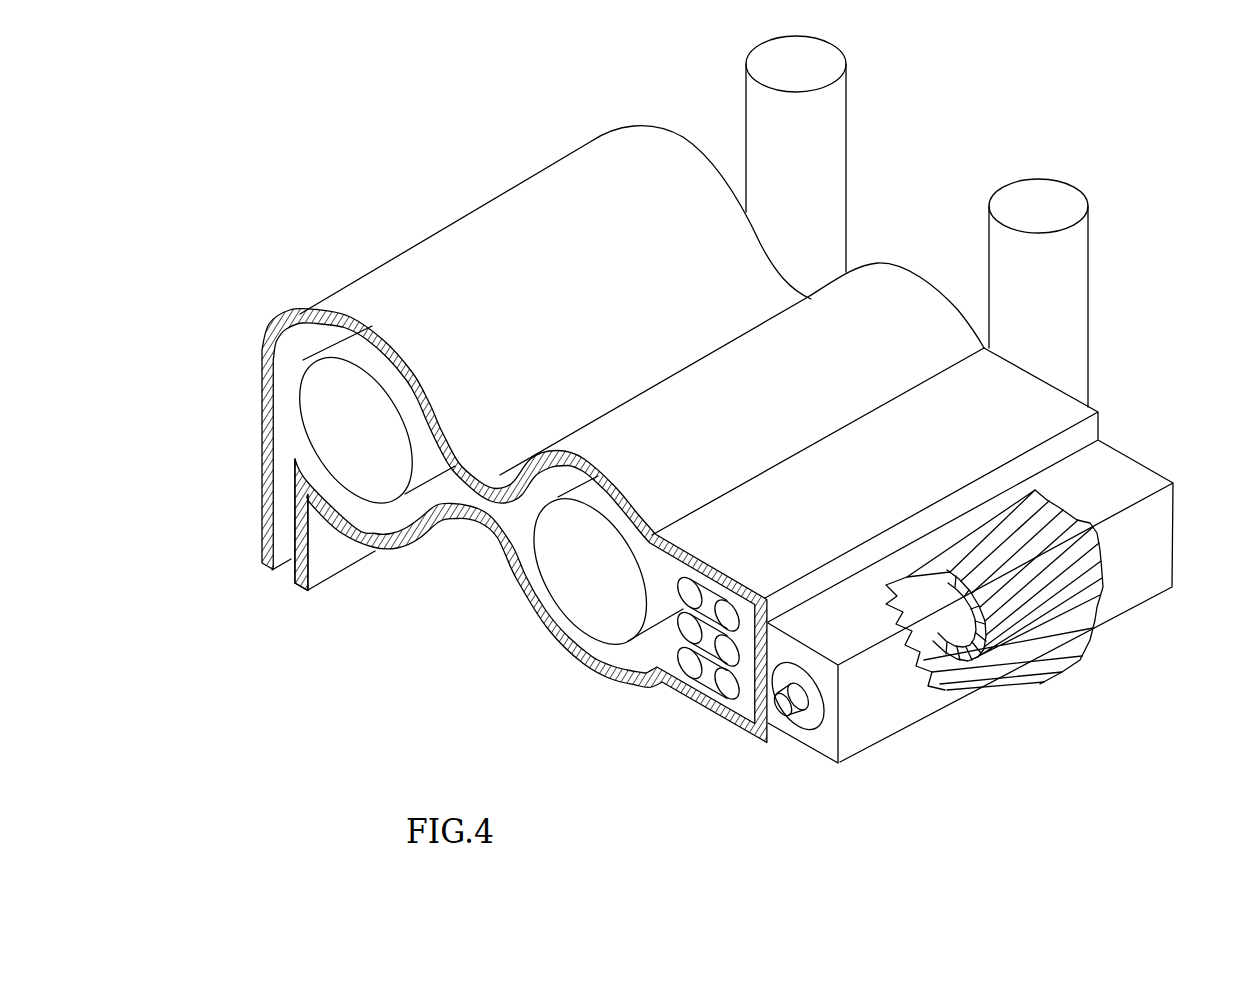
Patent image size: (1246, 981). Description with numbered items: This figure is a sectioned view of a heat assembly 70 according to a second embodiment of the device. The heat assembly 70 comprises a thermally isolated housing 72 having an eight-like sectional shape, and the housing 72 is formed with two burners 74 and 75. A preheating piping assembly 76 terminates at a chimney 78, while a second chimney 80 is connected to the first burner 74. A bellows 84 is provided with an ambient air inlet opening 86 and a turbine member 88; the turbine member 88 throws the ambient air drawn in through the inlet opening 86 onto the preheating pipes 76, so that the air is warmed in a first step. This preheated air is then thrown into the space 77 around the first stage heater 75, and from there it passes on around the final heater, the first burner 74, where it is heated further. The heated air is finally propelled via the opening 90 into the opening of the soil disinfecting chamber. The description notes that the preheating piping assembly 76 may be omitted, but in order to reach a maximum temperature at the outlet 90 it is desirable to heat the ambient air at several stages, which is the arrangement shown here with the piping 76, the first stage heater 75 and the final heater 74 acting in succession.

The heat assembly 70 is at (312, 188).
The thermally isolated housing 72 is at (520, 218).
The first burner 74 is at (343, 422).
The second burner 75 is at (583, 583).
The preheating piping assembly 76 is at (665, 692).
The space around the first stage heater 77 is at (637, 653).
The chimney 78 is at (1067, 297).
The second chimney 80 is at (823, 167).
The bellows 84 is at (903, 687).
The ambient air inlet opening 86 is at (973, 653).
The turbine member 88 is at (1033, 583).
The opening 90 is at (283, 567).